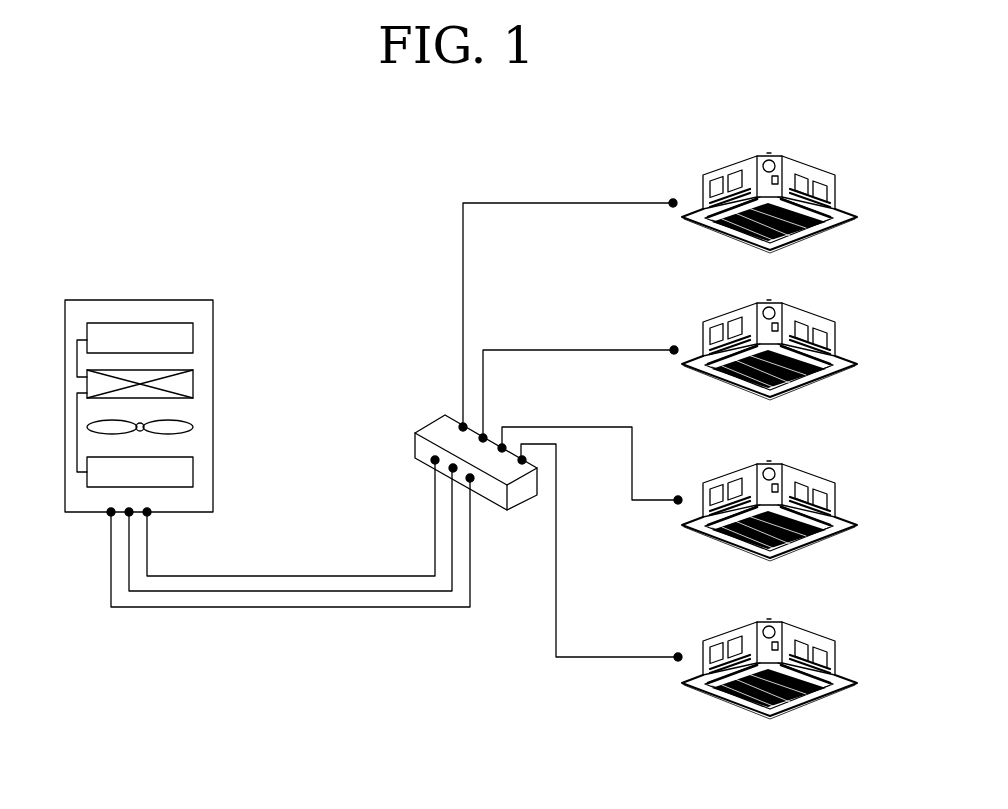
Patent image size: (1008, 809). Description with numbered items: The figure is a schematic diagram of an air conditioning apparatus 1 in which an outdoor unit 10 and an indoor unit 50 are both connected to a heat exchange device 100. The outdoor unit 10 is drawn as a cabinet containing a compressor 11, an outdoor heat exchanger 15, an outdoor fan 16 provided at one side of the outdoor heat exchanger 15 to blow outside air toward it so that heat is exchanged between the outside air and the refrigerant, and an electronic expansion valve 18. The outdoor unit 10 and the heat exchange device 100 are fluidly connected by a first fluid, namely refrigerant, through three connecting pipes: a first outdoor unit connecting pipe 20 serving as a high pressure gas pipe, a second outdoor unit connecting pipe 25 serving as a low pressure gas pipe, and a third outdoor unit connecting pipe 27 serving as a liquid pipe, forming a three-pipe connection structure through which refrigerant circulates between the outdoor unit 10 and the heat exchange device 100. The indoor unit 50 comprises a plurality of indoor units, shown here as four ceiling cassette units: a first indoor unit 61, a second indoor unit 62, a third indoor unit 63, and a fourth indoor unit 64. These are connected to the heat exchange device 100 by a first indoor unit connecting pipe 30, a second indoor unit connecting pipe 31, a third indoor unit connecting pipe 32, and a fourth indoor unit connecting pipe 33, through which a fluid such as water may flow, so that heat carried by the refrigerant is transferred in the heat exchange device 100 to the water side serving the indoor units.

The air conditioning apparatus 1 is at (433, 212).
The outdoor unit 10 is at (157, 292).
The compressor 11 is at (193, 339).
The outdoor heat exchanger 15 is at (193, 385).
The outdoor fan 16 is at (193, 427).
The electronic expansion valve 18 is at (193, 473).
The first outdoor unit connecting pipe 20 is at (266, 576).
The second outdoor unit connecting pipe 25 is at (295, 592).
The third outdoor unit connecting pipe 27 is at (365, 608).
The first indoor unit connecting pipe 30 is at (585, 203).
The second indoor unit connecting pipe 31 is at (585, 350).
The third indoor unit connecting pipe 32 is at (583, 428).
The fourth indoor unit connecting pipe 33 is at (580, 658).
The indoor unit 50 is at (817, 141).
The first indoor unit 61 is at (807, 230).
The second indoor unit 62 is at (807, 378).
The third indoor unit 63 is at (807, 538).
The fourth indoor unit 64 is at (813, 700).
The heat exchange device 100 is at (417, 413).